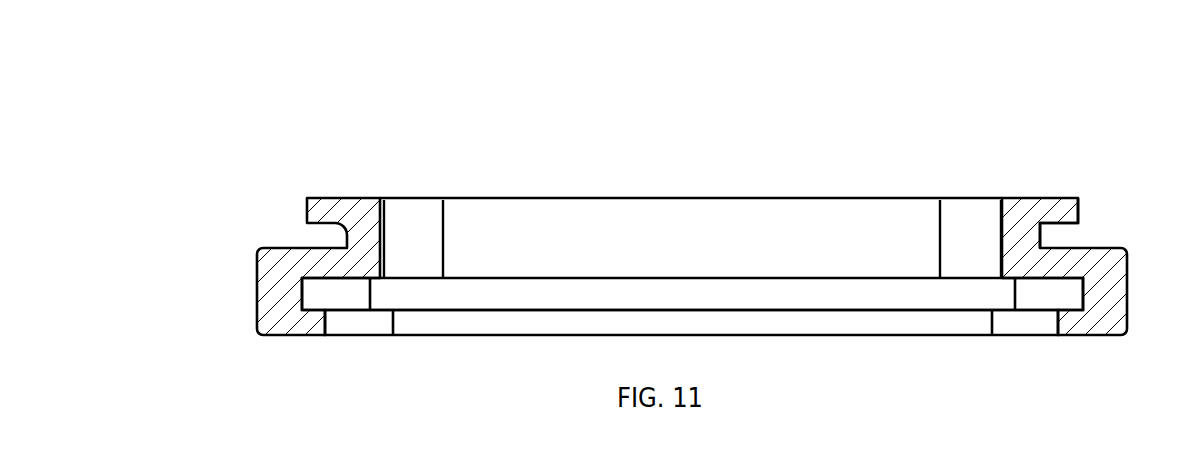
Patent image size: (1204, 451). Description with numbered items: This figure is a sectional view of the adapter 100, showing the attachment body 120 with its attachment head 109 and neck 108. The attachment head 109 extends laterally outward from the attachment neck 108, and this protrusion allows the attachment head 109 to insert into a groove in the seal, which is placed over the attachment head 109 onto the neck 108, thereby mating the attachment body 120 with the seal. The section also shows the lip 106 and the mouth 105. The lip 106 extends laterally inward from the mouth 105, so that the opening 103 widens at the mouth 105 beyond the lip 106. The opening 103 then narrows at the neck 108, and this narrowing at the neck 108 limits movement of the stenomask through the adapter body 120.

The battery cell assembly 100 is at (480, 192).
The opening 103 is at (767, 238).
The mouth 105 is at (318, 295).
The lip 106 is at (1063, 322).
The neck 108 is at (1013, 223).
The attachment head 109 is at (1070, 203).
The attachment body 120 is at (333, 193).